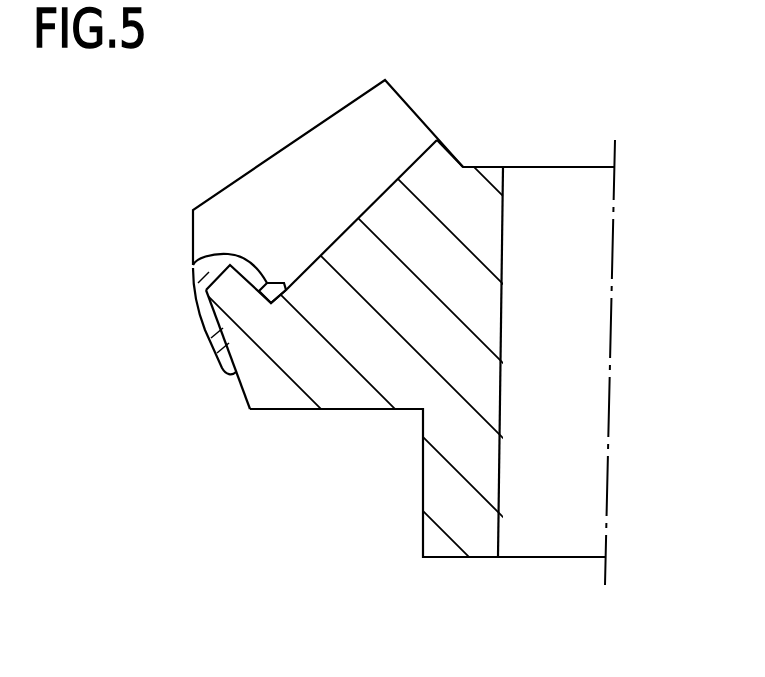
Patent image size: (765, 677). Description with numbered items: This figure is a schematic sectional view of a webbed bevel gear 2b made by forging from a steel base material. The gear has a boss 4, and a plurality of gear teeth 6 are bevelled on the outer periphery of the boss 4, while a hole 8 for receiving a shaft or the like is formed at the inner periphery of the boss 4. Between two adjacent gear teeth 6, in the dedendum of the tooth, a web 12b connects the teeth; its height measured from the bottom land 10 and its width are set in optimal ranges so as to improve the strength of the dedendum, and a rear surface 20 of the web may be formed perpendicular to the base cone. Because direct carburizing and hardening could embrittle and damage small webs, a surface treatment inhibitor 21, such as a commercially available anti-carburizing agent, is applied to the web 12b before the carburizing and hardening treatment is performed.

The webbed bevel gear 2b is at (382, 457).
The boss 4 is at (477, 293).
The gear teeth 6 is at (295, 163).
The hole 8 is at (497, 499).
The bottom land 10 is at (387, 190).
The web 12b is at (241, 322).
The rear surface 20 is at (259, 268).
The surface treatment inhibitor 21 is at (203, 319).